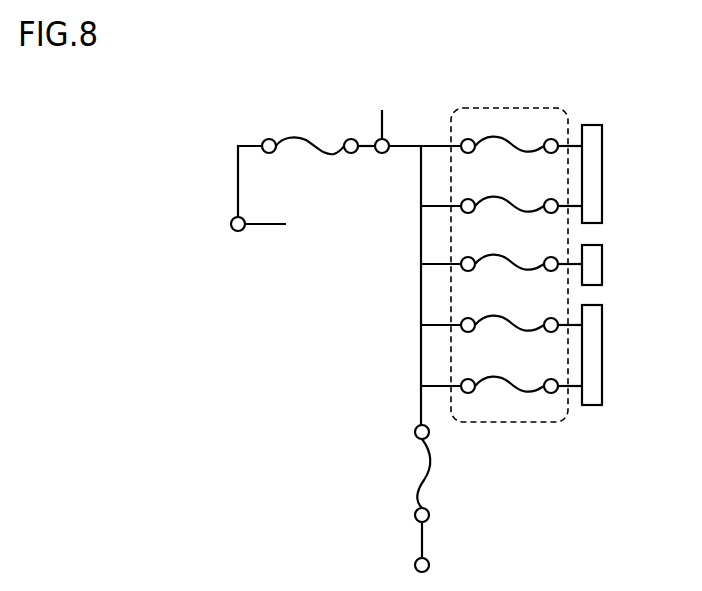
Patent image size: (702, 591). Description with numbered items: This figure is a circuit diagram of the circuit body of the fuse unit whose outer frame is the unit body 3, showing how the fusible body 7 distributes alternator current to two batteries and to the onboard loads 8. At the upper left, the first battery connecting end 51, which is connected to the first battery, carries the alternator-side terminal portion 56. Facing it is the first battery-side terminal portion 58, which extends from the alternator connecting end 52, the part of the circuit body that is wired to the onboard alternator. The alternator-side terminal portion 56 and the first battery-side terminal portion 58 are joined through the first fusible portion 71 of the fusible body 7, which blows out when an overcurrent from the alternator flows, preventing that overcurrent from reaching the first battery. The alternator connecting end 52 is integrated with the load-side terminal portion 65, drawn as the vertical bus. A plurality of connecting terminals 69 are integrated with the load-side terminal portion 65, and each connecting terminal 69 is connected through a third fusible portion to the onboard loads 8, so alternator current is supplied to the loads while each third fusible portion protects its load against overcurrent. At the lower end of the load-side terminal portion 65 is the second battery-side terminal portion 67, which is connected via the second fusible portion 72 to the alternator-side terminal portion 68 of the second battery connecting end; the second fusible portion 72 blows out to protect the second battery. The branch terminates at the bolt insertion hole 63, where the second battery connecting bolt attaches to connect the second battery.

The unit body 3 is at (317, 313).
The fusible body 7 is at (332, 132).
The onboard loads 8 is at (593, 175).
The first battery connecting end 51 is at (237, 232).
The alternator connecting end 52 is at (382, 154).
The alternator-side terminal portion 56 is at (252, 146).
The first battery-side terminal portion 58 is at (372, 140).
The bolt insertion hole 63 is at (415, 568).
The load-side terminal portion 65 is at (421, 254).
The second battery-side terminal portion 67 is at (421, 407).
The alternator-side terminal portion 68 is at (421, 540).
The connecting terminals 69 is at (435, 144).
The first fusible portion 71 is at (315, 145).
The second fusible portion 72 is at (418, 480).